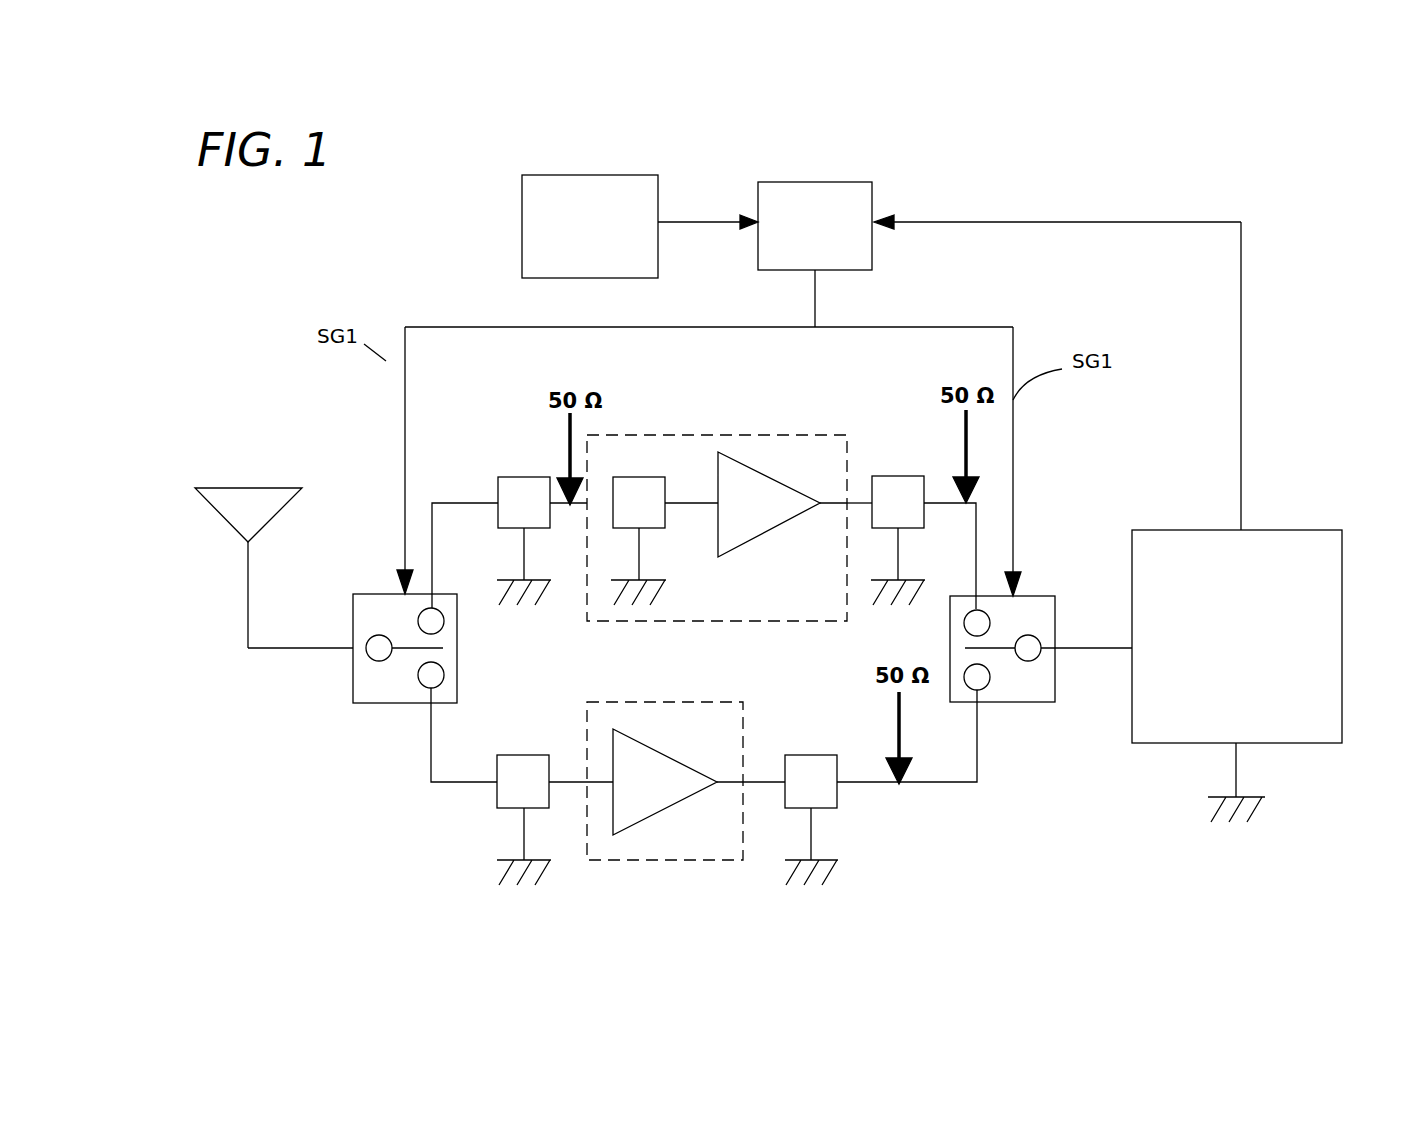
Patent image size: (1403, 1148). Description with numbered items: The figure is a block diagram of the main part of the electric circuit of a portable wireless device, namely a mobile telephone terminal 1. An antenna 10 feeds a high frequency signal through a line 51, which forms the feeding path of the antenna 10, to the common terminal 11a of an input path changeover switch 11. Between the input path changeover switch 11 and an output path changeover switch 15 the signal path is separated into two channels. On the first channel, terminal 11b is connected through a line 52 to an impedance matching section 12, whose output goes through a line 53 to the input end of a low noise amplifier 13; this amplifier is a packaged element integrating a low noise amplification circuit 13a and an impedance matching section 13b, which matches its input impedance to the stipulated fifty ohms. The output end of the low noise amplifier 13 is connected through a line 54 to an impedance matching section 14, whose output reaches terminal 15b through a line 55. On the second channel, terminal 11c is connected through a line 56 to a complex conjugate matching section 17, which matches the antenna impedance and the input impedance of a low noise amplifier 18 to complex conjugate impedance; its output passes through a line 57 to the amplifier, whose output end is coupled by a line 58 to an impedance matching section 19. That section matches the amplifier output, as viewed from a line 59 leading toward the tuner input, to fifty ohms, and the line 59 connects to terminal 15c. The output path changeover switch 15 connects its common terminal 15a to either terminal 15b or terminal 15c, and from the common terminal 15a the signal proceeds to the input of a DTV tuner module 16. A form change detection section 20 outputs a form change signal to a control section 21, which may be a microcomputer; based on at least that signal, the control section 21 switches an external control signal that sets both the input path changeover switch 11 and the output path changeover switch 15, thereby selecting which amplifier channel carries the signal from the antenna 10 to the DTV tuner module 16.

The mobile telephone terminal 1 is at (1004, 120).
The antenna 10 is at (232, 490).
The input path changeover switch 11 is at (423, 657).
The common terminal 11a is at (385, 661).
The terminal 11b is at (432, 607).
The terminal 11c is at (438, 677).
The impedance matching section 12 is at (511, 477).
The low noise amplifier 13 is at (717, 495).
The low noise amplification circuit 13a is at (783, 525).
The impedance matching section 13b is at (628, 477).
The impedance matching section 14 is at (888, 477).
The output path changeover switch 15 is at (1016, 652).
The common terminal 15a is at (1040, 655).
The terminal 15b is at (975, 610).
The terminal 15c is at (985, 688).
The DTV tuner module 16 is at (1295, 530).
The complex conjugate matching section 17 is at (518, 755).
The low noise amplifier 18 is at (743, 702).
The impedance matching section 19 is at (805, 755).
The form change detection section 20 is at (653, 175).
The control section 21 is at (856, 182).
The line 51 is at (293, 641).
The line 52 is at (446, 503).
The line 53 is at (575, 503).
The line 54 is at (858, 502).
The line 55 is at (977, 530).
The line 56 is at (475, 783).
The line 57 is at (567, 783).
The line 58 is at (760, 783).
The line 59 is at (940, 783).